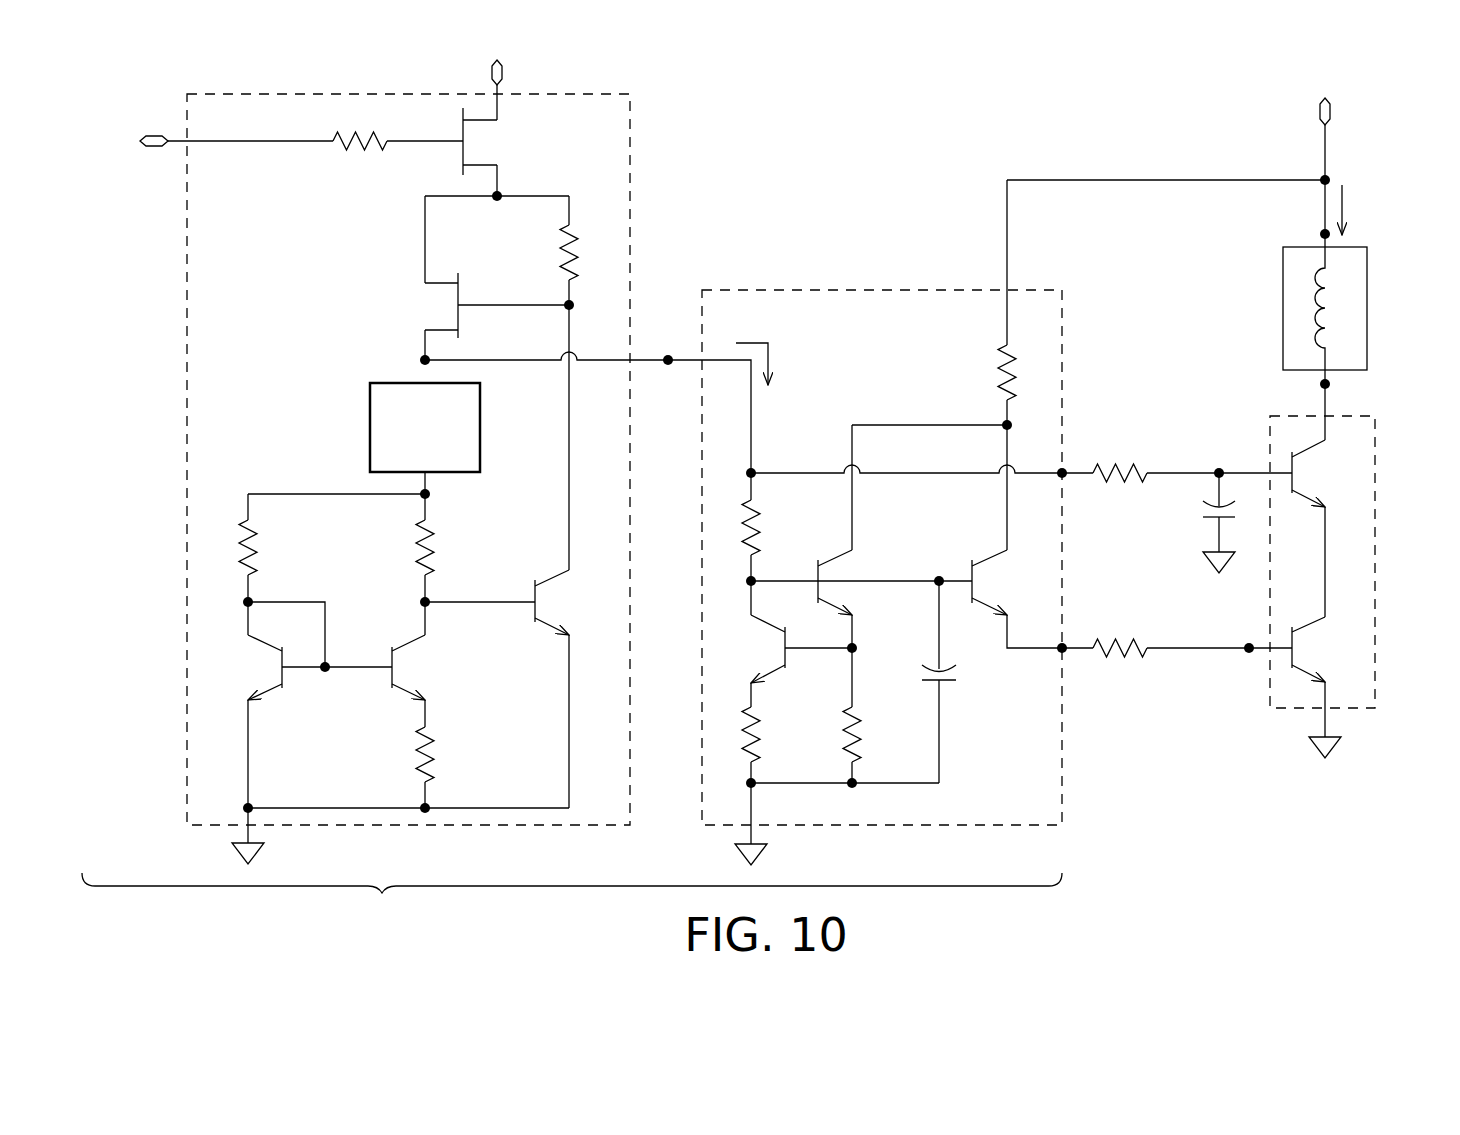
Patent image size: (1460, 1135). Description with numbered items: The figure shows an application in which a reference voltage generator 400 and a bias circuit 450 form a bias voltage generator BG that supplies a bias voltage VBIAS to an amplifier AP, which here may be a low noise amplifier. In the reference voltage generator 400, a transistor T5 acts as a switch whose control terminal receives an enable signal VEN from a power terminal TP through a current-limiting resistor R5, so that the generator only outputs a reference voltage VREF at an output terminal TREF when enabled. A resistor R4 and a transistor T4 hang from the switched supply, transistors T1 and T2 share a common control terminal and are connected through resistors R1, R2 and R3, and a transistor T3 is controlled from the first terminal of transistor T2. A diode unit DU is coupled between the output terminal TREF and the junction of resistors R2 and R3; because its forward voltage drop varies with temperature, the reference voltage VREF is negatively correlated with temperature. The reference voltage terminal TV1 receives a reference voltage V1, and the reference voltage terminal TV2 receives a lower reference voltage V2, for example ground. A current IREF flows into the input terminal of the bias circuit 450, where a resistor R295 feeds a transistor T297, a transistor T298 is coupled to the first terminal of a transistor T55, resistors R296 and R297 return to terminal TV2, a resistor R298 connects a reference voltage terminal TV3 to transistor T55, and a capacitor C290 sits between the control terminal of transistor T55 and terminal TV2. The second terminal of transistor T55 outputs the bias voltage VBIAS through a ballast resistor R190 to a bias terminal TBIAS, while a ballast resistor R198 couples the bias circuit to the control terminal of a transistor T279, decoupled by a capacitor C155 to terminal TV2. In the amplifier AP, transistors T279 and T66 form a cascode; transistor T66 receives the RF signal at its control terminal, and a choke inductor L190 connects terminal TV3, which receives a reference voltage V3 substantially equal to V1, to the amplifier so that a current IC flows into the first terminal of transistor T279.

The reference voltage generator 400 is at (632, 193).
The bias circuit 450 is at (1064, 338).
The amplifier AP is at (1378, 555).
The bias voltage generator BG is at (572, 903).
The diode unit DU is at (366, 428).
The resistor R1 is at (443, 767).
The resistor R2 is at (228, 548).
The resistor R3 is at (443, 548).
The resistor R4 is at (588, 250).
The resistor R5 is at (360, 127).
The transistor T1 is at (251, 705).
The transistor T2 is at (423, 664).
The transistor T3 is at (515, 689).
The transistor T4 is at (481, 278).
The transistor T5 is at (495, 140).
The resistor R295 is at (785, 527).
The resistor R296 is at (785, 745).
The resistor R297 is at (885, 715).
The resistor R298 is at (973, 326).
The transistor T297 is at (779, 644).
The transistor T298 is at (867, 536).
The transistor T55 is at (1032, 560).
The capacitor C290 is at (966, 682).
The resistor R198 is at (1155, 456).
The resistor R190 is at (1170, 631).
The capacitor C155 is at (1187, 523).
The transistor T279 is at (1296, 528).
The transistor T66 is at (1308, 687).
The inductor L190 is at (1335, 302).
The power terminal TP is at (154, 135).
The reference voltage terminal TV1 is at (503, 70).
The reference voltage terminal TV2 is at (234, 850).
The reference voltage terminal TV3 is at (1331, 108).
The output terminal TREF is at (665, 340).
The bias terminal TBIAS is at (1247, 656).
The enable signal VEN is at (127, 144).
The reference voltage V1 is at (477, 70).
The reference voltage V2 is at (266, 842).
The reference voltage V3 is at (1325, 157).
The reference voltage VREF is at (673, 366).
The bias voltage VBIAS is at (1076, 654).
The current IREF is at (777, 364).
The current IC is at (1357, 210).